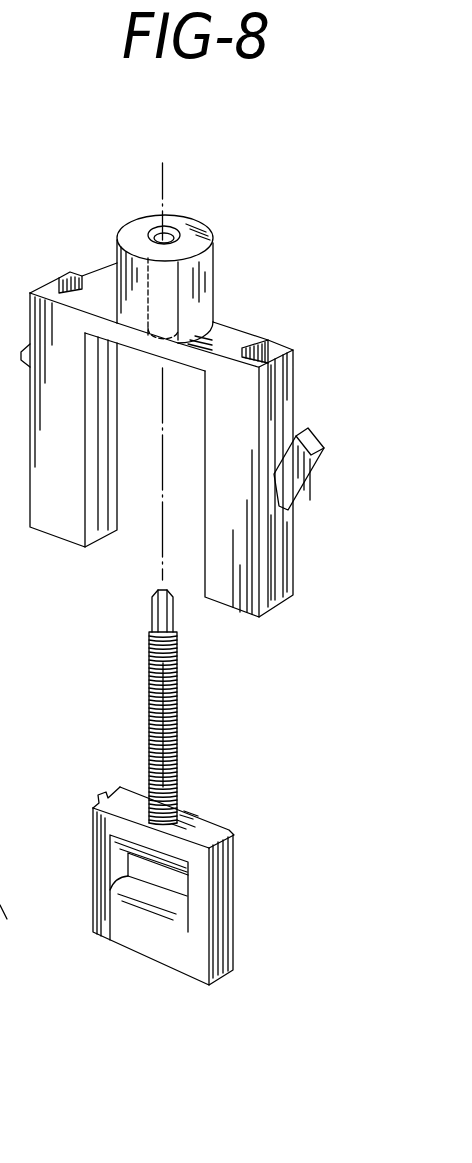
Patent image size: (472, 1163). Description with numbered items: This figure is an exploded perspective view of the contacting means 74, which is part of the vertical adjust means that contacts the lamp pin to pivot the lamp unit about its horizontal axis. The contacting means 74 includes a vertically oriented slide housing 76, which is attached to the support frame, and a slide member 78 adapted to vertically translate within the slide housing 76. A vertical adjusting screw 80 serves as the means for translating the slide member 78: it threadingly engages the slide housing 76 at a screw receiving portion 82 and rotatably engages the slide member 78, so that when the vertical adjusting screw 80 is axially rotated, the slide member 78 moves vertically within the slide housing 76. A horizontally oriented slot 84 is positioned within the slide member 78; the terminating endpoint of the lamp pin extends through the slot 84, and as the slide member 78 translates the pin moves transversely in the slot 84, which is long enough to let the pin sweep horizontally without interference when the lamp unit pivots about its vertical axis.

The contacting means 74 is at (3, 50).
The vertically oriented slide housing 76 is at (230, 344).
The slide member 78 is at (200, 835).
The vertical adjusting screw 80 is at (178, 738).
The screw receiving portion 82 is at (202, 272).
The horizontally oriented slot 84 is at (167, 880).